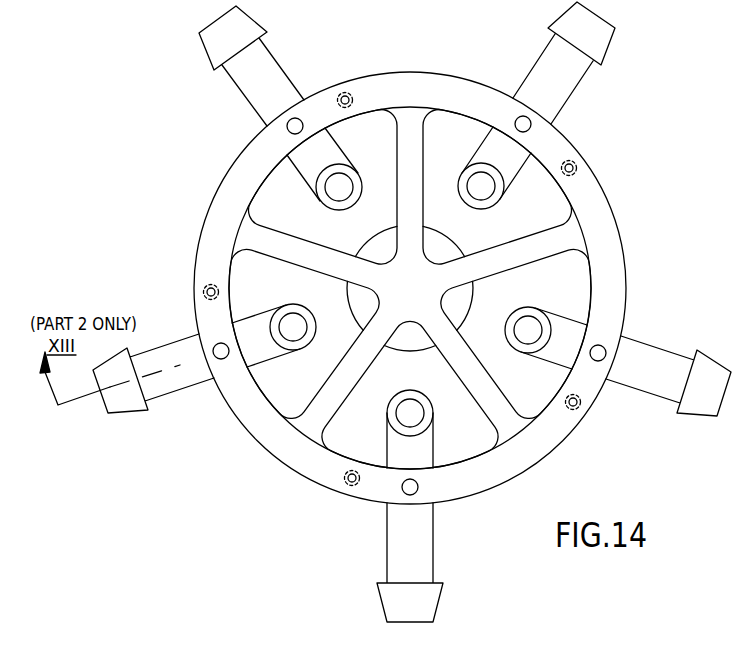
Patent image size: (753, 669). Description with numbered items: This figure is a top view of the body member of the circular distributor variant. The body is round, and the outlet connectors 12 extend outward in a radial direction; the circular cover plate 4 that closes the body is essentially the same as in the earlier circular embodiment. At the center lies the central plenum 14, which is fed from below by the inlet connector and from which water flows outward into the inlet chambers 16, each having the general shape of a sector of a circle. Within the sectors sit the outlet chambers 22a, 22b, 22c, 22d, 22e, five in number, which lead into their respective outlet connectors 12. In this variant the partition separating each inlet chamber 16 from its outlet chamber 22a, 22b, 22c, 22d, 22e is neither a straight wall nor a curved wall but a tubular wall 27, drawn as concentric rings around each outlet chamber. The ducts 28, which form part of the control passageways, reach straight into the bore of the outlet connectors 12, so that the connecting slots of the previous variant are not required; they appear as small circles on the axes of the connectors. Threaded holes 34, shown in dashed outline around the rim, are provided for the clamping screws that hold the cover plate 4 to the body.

The cover plate 4 is at (455, 86).
The outlet connector 12 is at (648, 358).
The central plenum 14 is at (440, 243).
The inlet chamber 16 is at (494, 331).
The outlet chamber 22a is at (350, 181).
The outlet chamber 22b is at (290, 322).
The outlet chamber 22c is at (407, 411).
The outlet chamber 22d is at (535, 330).
The outlet chamber 22e is at (474, 181).
The tubular wall 27 is at (527, 352).
The duct 28 is at (295, 117).
The threaded hole 34 is at (576, 164).